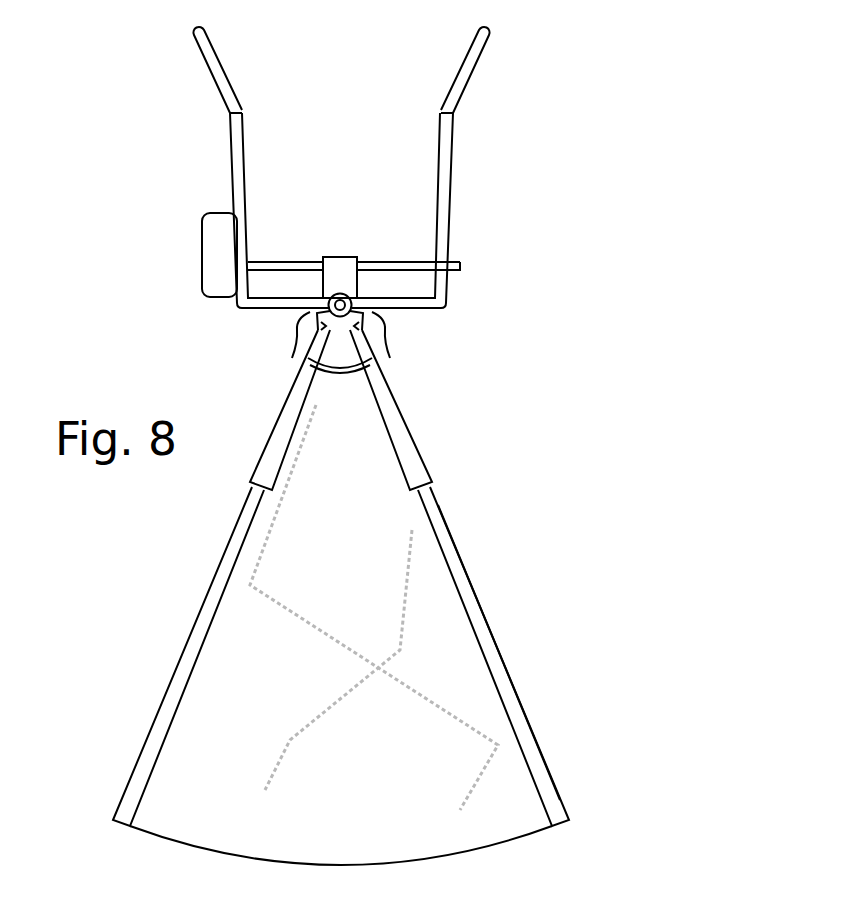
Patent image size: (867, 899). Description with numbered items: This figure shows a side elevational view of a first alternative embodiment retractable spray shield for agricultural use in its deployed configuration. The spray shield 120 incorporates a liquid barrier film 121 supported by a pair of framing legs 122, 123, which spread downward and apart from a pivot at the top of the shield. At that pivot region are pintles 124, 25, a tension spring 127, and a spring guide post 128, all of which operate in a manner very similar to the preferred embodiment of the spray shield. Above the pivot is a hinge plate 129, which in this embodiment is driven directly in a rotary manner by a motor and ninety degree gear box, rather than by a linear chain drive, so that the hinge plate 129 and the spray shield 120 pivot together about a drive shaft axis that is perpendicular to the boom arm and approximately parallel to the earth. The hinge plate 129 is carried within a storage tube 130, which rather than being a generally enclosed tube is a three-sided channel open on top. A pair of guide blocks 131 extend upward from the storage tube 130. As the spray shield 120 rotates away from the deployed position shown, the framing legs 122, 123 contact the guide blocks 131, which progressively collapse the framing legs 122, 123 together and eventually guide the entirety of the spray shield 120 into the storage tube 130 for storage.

The guide blocks 131 is at (474, 63).
The storage tube 130 is at (449, 201).
The hinge plate 129 is at (358, 275).
The spring guide post 128 is at (316, 308).
The tension spring 127 is at (372, 308).
The pintle 124 is at (298, 357).
The right housing portion 25 is at (383, 358).
The spray shield 120 is at (422, 462).
The framing leg 122 is at (166, 705).
The framing leg 123 is at (450, 560).
The liquid barrier film 121 is at (456, 648).